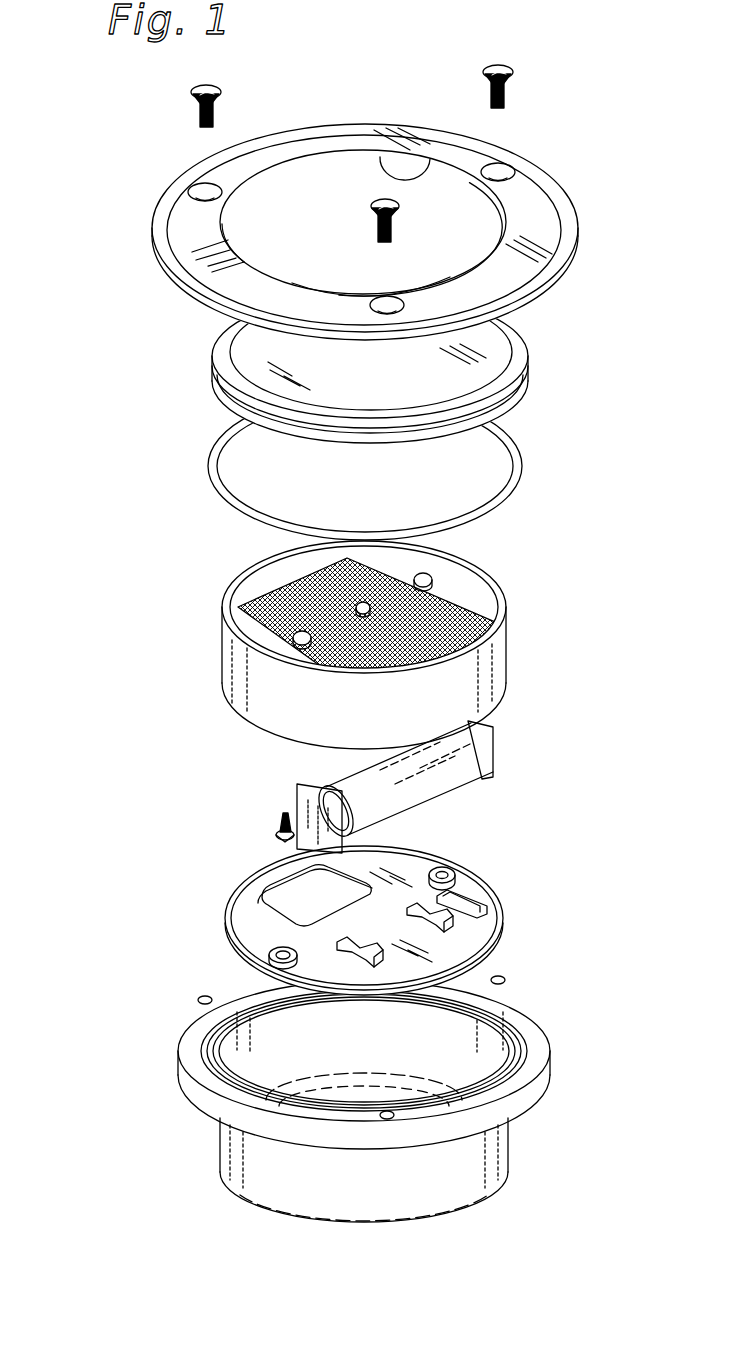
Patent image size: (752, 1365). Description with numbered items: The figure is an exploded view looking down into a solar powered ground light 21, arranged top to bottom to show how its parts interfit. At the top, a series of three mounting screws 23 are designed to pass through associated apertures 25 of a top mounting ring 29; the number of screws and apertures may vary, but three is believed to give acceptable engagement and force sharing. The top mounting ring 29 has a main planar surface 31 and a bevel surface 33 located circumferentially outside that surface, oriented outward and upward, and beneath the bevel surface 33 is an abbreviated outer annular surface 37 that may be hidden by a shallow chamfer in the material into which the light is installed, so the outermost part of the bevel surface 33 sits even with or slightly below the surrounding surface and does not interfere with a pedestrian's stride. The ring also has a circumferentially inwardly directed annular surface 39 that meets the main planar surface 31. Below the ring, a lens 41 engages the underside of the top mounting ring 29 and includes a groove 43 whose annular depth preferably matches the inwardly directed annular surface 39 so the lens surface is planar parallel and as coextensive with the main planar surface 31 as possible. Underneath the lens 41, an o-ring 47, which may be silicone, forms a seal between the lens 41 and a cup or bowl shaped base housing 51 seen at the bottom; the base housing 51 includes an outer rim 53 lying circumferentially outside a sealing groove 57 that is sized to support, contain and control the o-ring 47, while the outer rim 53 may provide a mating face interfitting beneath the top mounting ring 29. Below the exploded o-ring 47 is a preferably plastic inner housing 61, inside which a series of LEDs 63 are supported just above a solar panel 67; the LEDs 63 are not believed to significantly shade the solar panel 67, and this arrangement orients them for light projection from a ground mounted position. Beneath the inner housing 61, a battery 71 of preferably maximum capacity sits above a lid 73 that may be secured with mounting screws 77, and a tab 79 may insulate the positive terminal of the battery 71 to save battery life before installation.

The solar powered ground light 21 is at (85, 95).
The mounting screws 23 is at (196, 110).
The apertures 25 is at (205, 195).
The top mounting ring 29 is at (290, 115).
The main planar surface 31 is at (325, 135).
The bevel surface 33 is at (565, 205).
The abbreviated outer annular surface 37 is at (565, 270).
The inwardly directed annular surface 39 is at (430, 173).
The lens 41 is at (538, 366).
The groove 43 is at (230, 360).
The o-ring 47 is at (534, 481).
The base housing 51 is at (561, 1040).
The outer rim 53 is at (493, 1090).
The sealing groove 57 is at (475, 1002).
The inner housing 61 is at (515, 651).
The LEDs 63 is at (418, 578).
The solar panel 67 is at (455, 608).
The battery 71 is at (330, 769).
The lid 73 is at (232, 890).
The mounting screws 77 is at (280, 822).
The tab 79 is at (298, 800).